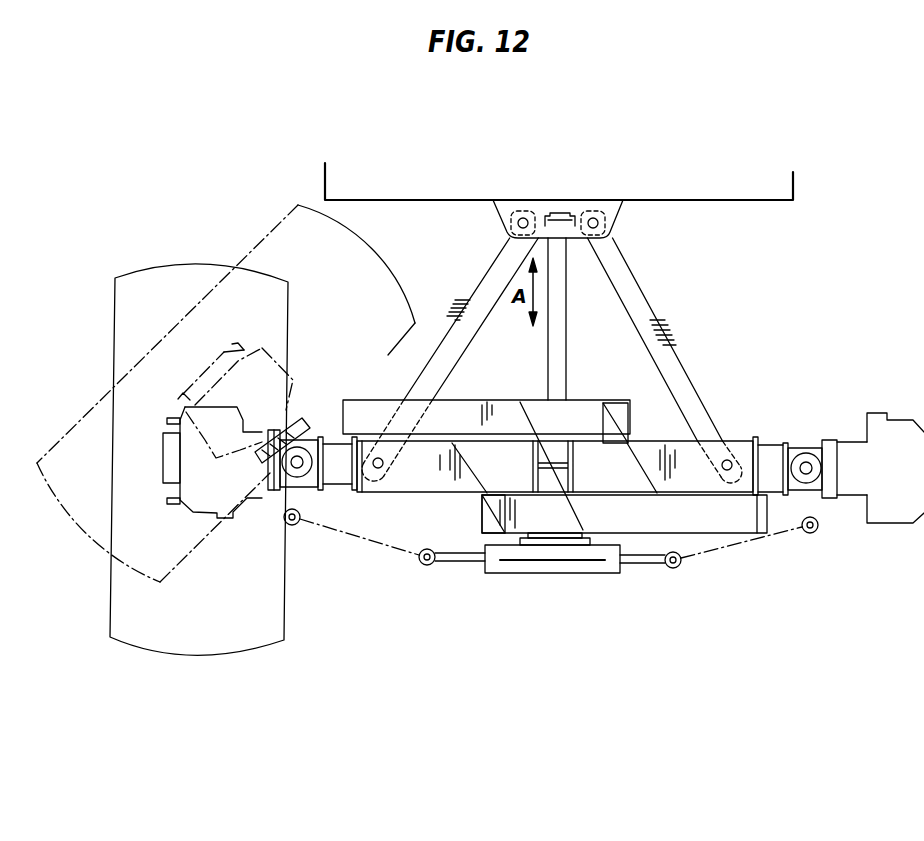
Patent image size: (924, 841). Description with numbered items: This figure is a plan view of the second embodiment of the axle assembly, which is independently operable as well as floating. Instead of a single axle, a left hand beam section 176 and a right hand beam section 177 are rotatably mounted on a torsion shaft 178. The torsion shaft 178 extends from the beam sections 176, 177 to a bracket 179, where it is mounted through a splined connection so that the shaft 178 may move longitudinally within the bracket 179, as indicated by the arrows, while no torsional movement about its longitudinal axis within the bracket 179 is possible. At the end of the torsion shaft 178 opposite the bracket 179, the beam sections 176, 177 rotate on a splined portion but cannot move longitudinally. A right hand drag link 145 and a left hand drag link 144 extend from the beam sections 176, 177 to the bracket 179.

The left hand drag link 144 is at (447, 318).
The right hand drag link 145 is at (660, 318).
The left hand beam section 176 is at (385, 493).
The right hand beam section 177 is at (645, 440).
The torsion shaft 178 is at (567, 300).
The bracket 179 is at (617, 213).